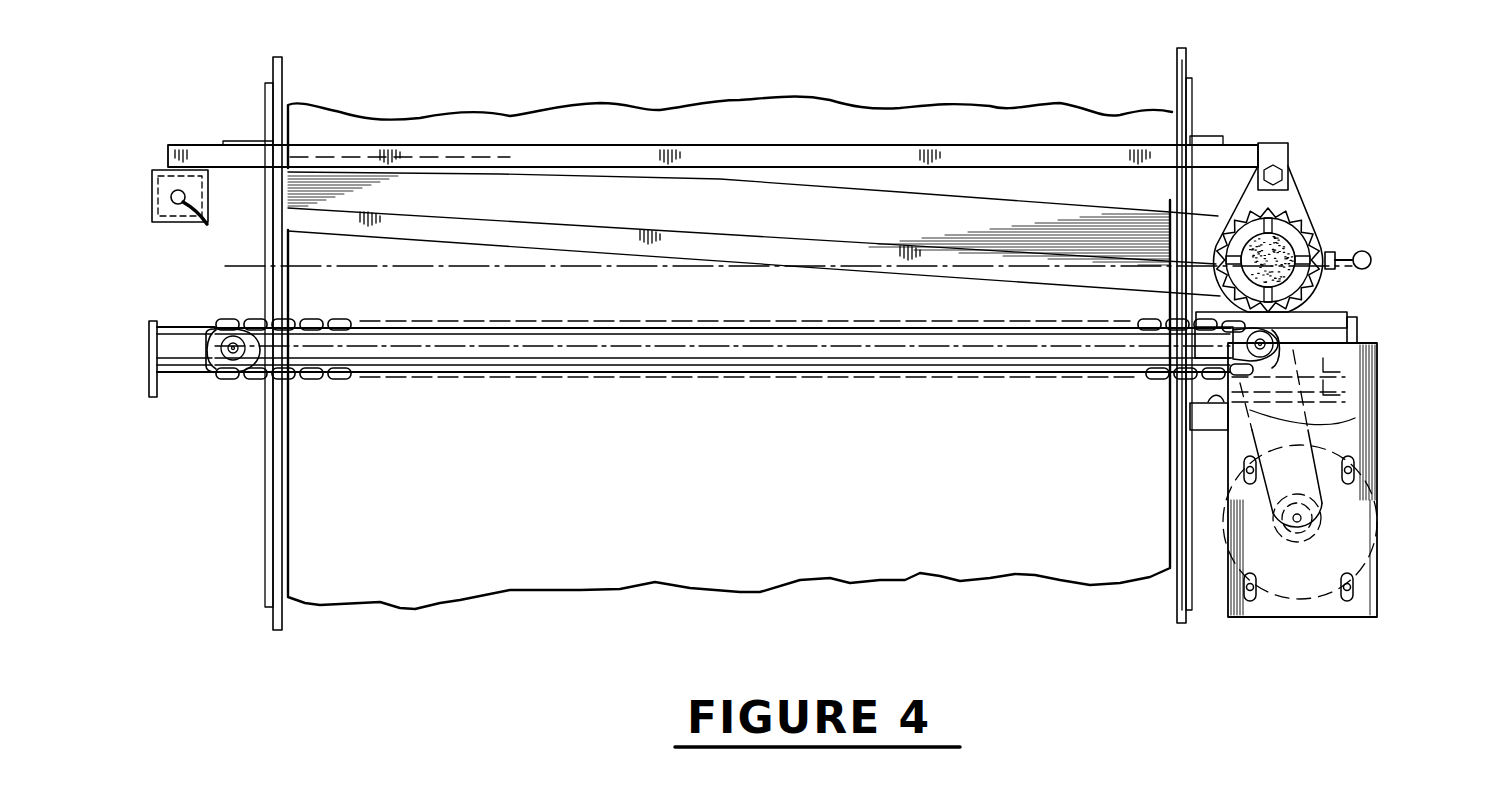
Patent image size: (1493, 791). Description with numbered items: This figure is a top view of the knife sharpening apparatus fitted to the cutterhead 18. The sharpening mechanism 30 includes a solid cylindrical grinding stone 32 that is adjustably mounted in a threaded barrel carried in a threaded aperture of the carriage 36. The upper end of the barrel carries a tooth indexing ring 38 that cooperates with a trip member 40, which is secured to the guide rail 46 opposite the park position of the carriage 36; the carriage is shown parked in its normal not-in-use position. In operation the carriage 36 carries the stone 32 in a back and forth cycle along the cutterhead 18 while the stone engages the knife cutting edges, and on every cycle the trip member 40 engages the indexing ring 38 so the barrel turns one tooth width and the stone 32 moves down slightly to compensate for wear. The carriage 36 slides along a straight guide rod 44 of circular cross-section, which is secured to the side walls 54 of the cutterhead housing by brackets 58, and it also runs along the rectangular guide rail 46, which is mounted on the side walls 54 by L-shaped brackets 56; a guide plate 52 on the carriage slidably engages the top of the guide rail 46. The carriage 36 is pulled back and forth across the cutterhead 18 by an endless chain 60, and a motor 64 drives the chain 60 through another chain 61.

The cutterhead 18 is at (417, 609).
The sharpening mechanism 30 is at (1374, 268).
The grinding stone 32 is at (1286, 247).
The carriage 36 is at (1300, 200).
The tooth indexing ring 38 is at (1332, 255).
The trip member 40 is at (196, 221).
The guide rod 44 is at (190, 378).
The guide rail 46 is at (172, 148).
The guide plate 52 is at (1280, 150).
The side walls 54 is at (283, 62).
The L-shaped brackets 56 is at (265, 100).
The brackets 58 is at (150, 392).
The endless chain 60 is at (1036, 380).
The chain 61 is at (1340, 420).
The motor 64 is at (1376, 580).